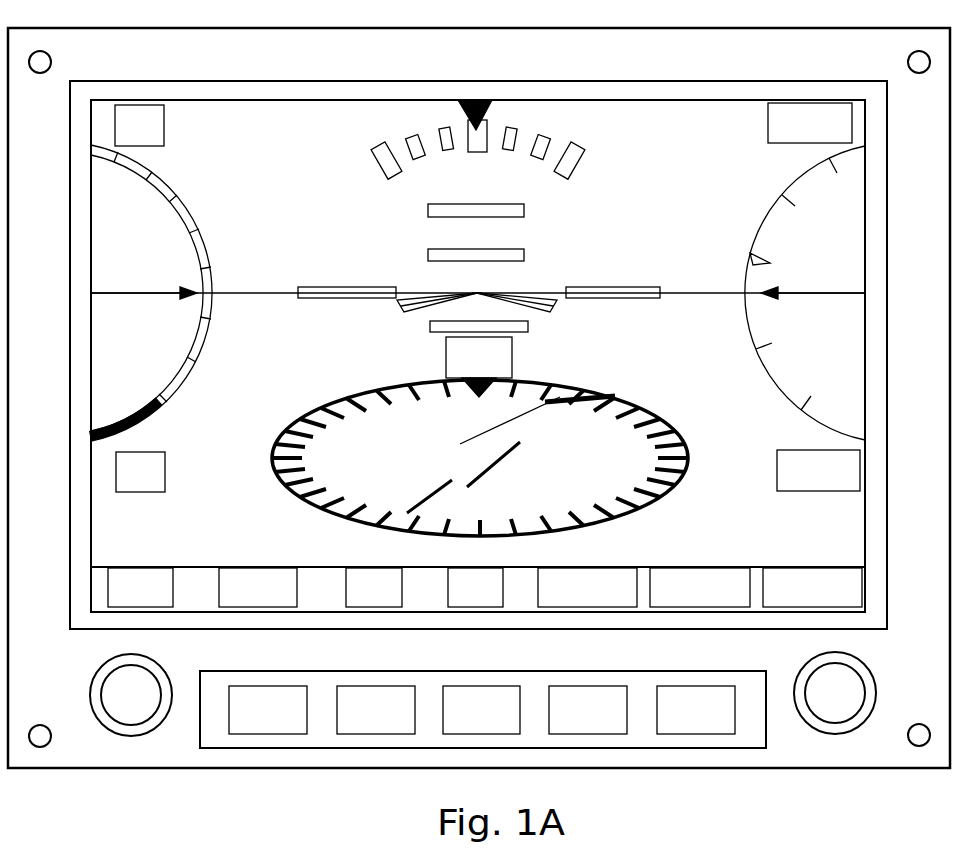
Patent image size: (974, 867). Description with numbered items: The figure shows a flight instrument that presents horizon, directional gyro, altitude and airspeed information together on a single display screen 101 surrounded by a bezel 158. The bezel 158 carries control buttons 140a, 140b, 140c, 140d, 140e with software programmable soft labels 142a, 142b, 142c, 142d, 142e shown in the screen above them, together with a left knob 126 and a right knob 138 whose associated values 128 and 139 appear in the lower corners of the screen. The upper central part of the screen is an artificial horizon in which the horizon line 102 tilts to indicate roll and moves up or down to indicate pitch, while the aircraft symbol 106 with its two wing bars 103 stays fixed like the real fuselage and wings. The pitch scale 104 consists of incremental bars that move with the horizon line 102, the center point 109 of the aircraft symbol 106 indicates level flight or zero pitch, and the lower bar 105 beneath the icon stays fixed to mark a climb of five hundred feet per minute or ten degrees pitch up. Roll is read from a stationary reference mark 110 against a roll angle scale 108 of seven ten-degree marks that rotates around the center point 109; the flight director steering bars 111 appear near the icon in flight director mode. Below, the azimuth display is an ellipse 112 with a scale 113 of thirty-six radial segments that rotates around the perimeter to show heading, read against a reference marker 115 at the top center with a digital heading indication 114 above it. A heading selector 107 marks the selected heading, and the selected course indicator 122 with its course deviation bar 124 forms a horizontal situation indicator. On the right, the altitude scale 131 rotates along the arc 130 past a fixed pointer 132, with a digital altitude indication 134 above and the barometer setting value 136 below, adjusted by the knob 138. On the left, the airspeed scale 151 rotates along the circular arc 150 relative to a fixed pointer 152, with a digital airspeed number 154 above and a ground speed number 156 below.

The display screen 101 is at (478, 356).
The horizon line 102 is at (418, 290).
The wing bars 103 is at (592, 288).
The pitch scale 104 is at (530, 257).
The lower bar 105 is at (530, 330).
The aircraft symbol 106 is at (538, 305).
The heading selector 107 is at (613, 403).
The roll angle scale 108 is at (573, 163).
The center point 109 is at (479, 292).
The reference mark 110 is at (480, 98).
The flight director steering bars 111 is at (427, 298).
The ellipse 112 is at (378, 398).
The scale 113 is at (300, 432).
The digital heading indication 114 is at (515, 358).
The reference marker 115 is at (460, 377).
The selected course indicator 122 is at (486, 431).
The course deviation bar 124 is at (505, 457).
The left knob 126 is at (103, 665).
The selector knob value 128 is at (107, 595).
The arc 130 is at (773, 198).
The altitude scale 131 is at (753, 240).
The fixed pointer 132 is at (800, 290).
The digital altitude indication 134 is at (767, 123).
The barometer setting value 136 is at (813, 492).
The knob 138 is at (875, 680).
The selector knob value 139 is at (817, 608).
The NAV button 140a is at (268, 710).
The FD button 140b is at (376, 710).
The control button 140c is at (481, 710).
The control button 140d is at (588, 710).
The control button 140e is at (696, 710).
The NAV indication 142a is at (255, 607).
The FD indication 142b is at (362, 607).
The AP indication 142c is at (477, 607).
The VNAV indication 142d is at (615, 607).
The BARO indication 142e is at (722, 607).
The circular arc 150 is at (185, 200).
The airspeed scale 151 is at (187, 237).
The fixed pointer 152 is at (157, 290).
The digital airspeed number 154 is at (165, 137).
The digital ground speed number 156 is at (135, 492).
The bezel 158 is at (803, 768).